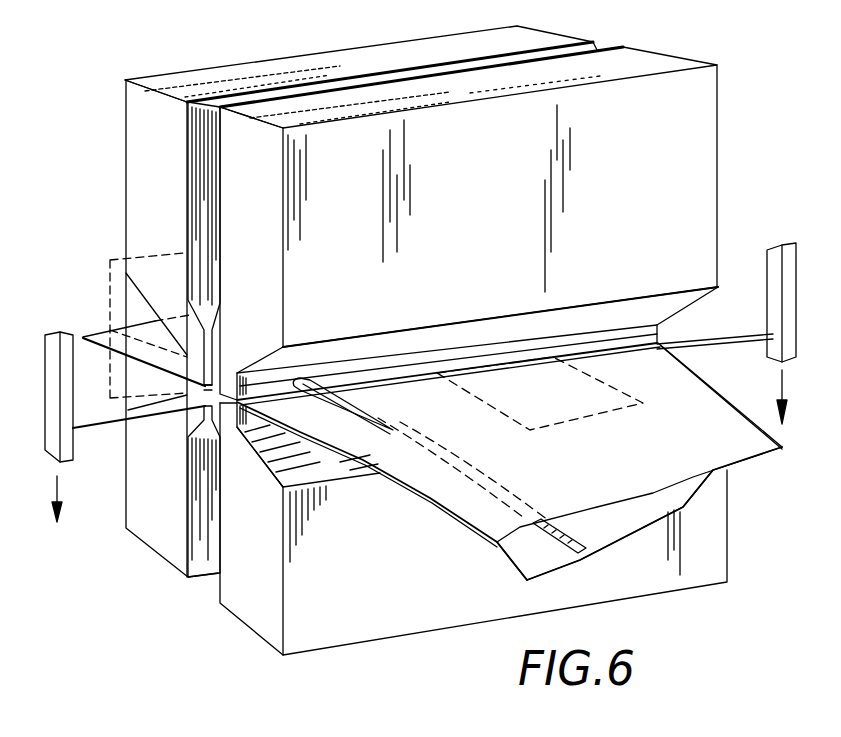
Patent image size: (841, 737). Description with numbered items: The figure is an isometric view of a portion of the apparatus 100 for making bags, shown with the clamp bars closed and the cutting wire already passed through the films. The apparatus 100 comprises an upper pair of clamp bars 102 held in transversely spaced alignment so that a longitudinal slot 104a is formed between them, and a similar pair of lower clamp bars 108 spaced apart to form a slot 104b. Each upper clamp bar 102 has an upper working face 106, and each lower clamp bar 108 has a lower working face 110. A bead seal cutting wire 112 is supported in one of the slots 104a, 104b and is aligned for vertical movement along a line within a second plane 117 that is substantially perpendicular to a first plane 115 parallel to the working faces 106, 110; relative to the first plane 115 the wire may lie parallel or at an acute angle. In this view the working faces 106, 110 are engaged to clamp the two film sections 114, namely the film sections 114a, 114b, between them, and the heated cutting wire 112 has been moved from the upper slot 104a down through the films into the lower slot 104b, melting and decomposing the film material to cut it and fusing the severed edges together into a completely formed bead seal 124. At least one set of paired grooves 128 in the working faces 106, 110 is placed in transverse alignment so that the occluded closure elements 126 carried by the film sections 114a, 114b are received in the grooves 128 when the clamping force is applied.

The apparatus 100 is at (152, 38).
The upper clamp bars 102 is at (142, 108).
The slot between upper clamp bars 104a is at (210, 322).
The slot between lower clamp bars 104b is at (195, 455).
The upper working face 106 is at (599, 349).
The lower clamp bars 108 is at (157, 540).
The lower working face 110 is at (245, 440).
The bead seal cutting wire 112 is at (98, 430).
The film sections 114 is at (690, 380).
The first film section 114a is at (647, 494).
The second film section 114b is at (683, 500).
The first plane 115 is at (615, 416).
The second plane 117 is at (110, 282).
The bead seal 124 is at (215, 380).
The occluded closure elements 126 is at (553, 552).
The paired grooves 128 is at (335, 394).